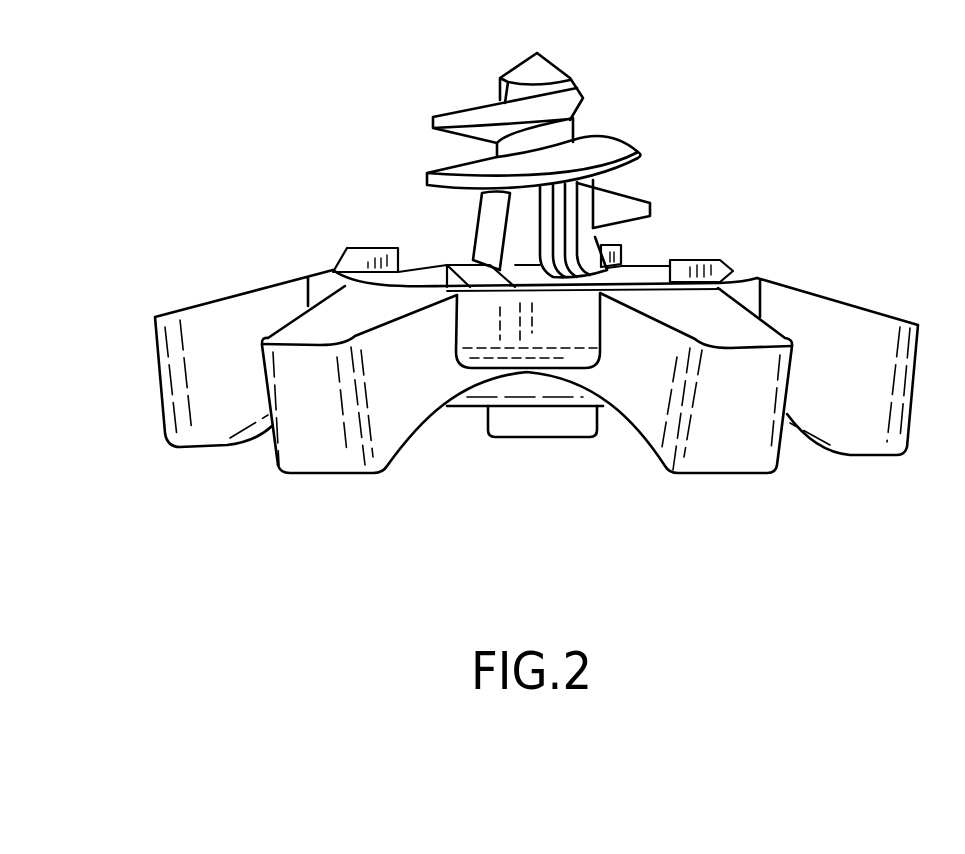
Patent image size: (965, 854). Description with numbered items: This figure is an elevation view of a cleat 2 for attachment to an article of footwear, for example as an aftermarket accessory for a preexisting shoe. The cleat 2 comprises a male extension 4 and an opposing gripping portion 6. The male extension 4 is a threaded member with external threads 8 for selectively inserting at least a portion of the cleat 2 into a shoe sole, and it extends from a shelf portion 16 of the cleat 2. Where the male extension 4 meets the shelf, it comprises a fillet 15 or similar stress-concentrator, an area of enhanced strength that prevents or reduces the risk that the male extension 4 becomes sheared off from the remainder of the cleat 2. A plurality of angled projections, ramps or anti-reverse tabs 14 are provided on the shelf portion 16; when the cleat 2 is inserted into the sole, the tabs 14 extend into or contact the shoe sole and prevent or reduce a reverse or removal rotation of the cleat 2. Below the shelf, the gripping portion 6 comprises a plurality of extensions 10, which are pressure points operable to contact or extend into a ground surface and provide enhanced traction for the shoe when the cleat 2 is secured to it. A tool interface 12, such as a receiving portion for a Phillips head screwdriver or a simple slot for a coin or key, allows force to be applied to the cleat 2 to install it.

The cleat 2 is at (526, 165).
The male extension 4 is at (595, 165).
The gripping portion 6 is at (408, 513).
The external threads 8 is at (671, 147).
The extensions 10 is at (210, 434).
The tool interface 12 is at (542, 430).
The anti-reverse tabs 14 is at (345, 242).
The fillet 15 is at (510, 265).
The shelf portion 16 is at (664, 243).